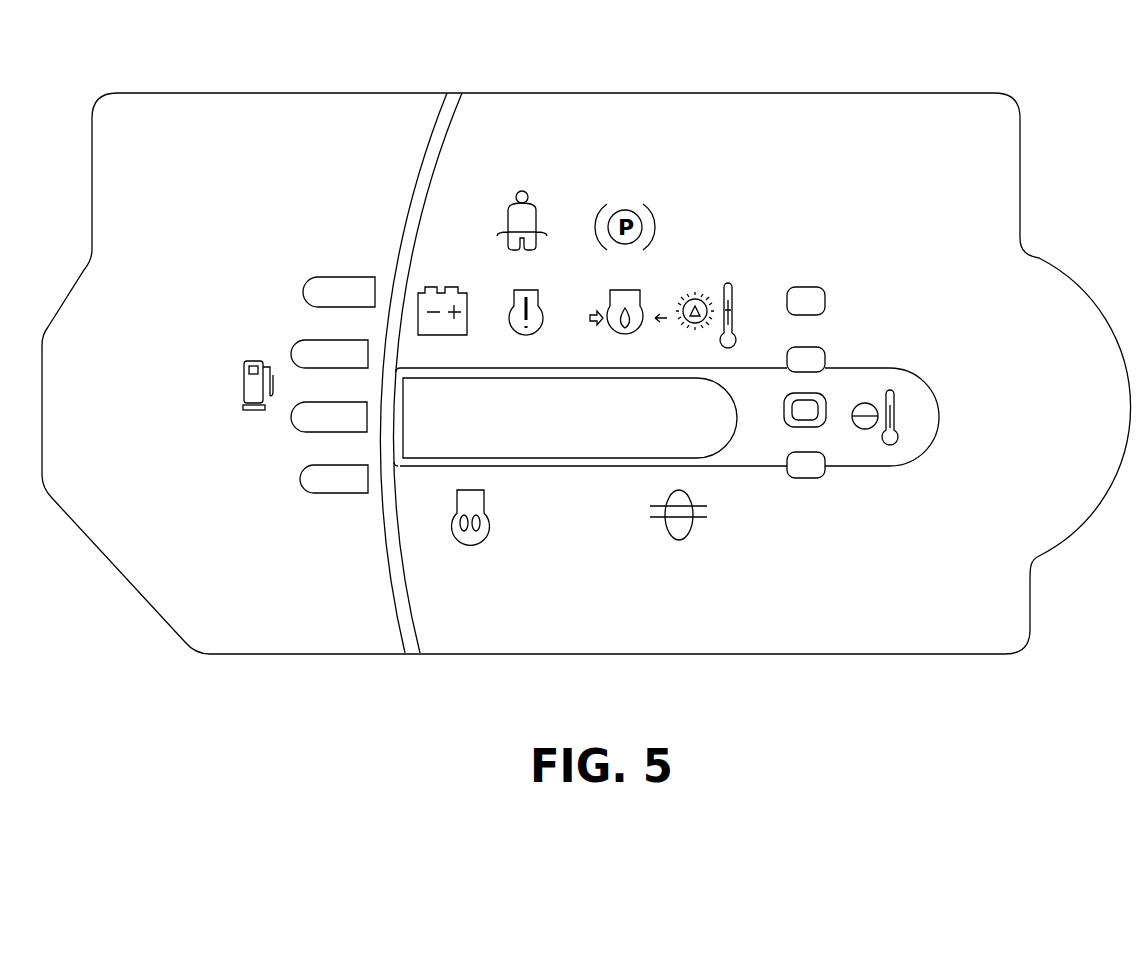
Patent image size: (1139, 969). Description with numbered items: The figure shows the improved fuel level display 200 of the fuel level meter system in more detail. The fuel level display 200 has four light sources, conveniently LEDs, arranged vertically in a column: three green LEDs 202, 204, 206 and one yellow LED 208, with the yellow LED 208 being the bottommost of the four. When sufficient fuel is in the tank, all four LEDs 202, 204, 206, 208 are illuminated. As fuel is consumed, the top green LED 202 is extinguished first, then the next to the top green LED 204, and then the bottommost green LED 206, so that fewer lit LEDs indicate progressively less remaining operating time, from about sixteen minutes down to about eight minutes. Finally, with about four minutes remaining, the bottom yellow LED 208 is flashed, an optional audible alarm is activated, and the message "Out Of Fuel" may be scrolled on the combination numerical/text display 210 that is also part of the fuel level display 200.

The fuel level display 200 is at (692, 67).
The top green LED 202 is at (303, 290).
The next to the top green LED 204 is at (291, 355).
The bottommost green LED 206 is at (291, 418).
The yellow LED 208 is at (300, 479).
The combination numerical/text display 210 is at (733, 397).